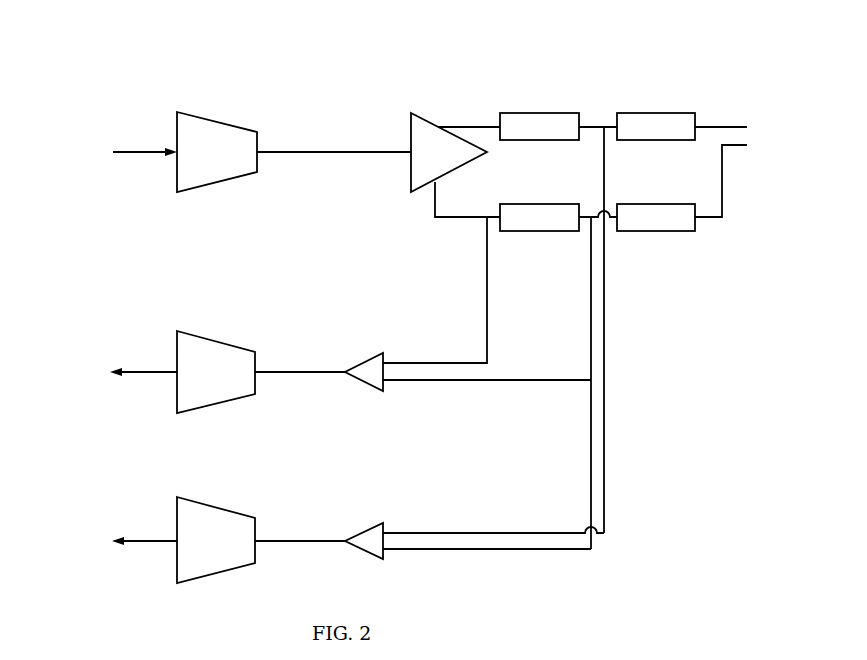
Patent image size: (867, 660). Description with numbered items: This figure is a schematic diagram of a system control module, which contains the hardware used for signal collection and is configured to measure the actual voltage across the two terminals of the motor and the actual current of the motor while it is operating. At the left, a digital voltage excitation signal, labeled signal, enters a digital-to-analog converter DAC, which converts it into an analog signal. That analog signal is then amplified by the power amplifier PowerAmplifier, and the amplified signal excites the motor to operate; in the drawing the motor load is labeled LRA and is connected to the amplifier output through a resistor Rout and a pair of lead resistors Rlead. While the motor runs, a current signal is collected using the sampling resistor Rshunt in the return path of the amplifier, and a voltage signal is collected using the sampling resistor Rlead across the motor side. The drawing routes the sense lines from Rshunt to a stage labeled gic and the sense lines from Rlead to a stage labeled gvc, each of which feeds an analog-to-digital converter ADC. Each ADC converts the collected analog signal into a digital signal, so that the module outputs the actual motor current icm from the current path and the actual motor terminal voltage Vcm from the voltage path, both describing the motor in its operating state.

The voltage excitation signal is at (112, 151).
The digital-to-analog converter DAC is at (217, 152).
The power amplifier PowerAmplifier is at (452, 131).
The output resistor Rout is at (539, 115).
The sampling resistor Rshunt is at (539, 206).
The sampling resistor Rlead is at (656, 161).
The linear resonant actuator LRA is at (742, 171).
The current sense gain amplifier gic is at (364, 360).
The voltage sense gain amplifier gvc is at (364, 529).
The analog-to-digital converter ADC is at (216, 457).
The actual current of the motor icm is at (126, 375).
The actual voltage across the two terminals of the motor Vcm is at (125, 539).